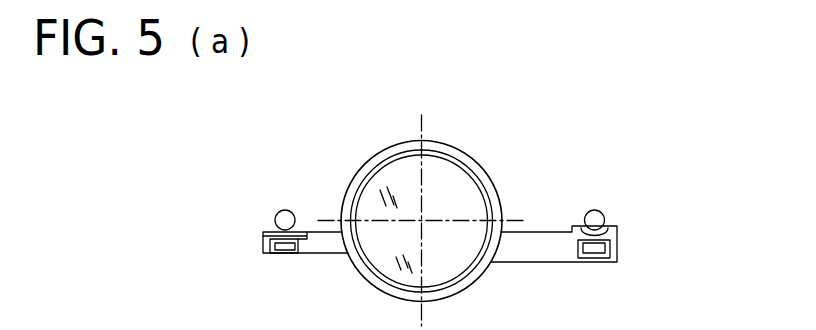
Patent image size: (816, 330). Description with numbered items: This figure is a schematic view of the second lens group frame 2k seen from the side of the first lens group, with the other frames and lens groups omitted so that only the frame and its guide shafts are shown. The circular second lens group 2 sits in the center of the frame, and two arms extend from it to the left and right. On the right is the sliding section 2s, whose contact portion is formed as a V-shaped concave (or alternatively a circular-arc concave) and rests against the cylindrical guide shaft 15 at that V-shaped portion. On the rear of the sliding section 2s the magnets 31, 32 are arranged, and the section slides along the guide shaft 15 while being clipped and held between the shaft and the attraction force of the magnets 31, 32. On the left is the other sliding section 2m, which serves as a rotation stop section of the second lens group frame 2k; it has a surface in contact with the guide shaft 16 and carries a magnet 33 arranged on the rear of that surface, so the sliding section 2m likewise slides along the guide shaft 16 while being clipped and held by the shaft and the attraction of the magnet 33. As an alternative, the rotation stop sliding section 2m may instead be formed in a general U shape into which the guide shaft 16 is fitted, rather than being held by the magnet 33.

The second lens group 2 is at (437, 190).
The second lens group frame 2k is at (484, 264).
The other sliding section (rotation stop section) 2m is at (293, 276).
The sliding section 2s is at (589, 273).
The guide shaft 16 is at (280, 210).
The guide shaft 15 is at (600, 209).
The magnet 33 is at (279, 255).
The magnet 31 is at (633, 280).
The magnet 32 is at (600, 247).